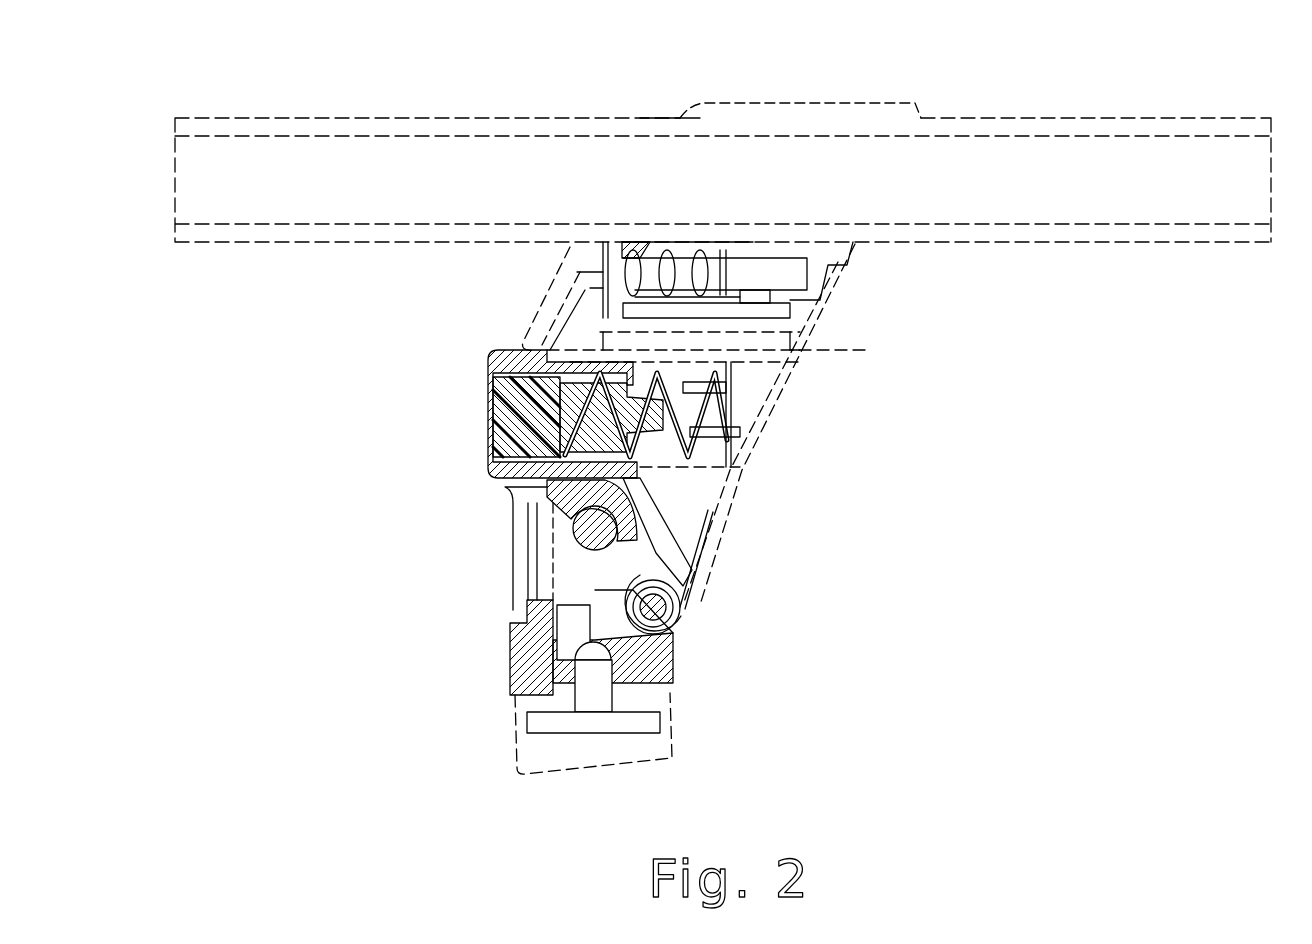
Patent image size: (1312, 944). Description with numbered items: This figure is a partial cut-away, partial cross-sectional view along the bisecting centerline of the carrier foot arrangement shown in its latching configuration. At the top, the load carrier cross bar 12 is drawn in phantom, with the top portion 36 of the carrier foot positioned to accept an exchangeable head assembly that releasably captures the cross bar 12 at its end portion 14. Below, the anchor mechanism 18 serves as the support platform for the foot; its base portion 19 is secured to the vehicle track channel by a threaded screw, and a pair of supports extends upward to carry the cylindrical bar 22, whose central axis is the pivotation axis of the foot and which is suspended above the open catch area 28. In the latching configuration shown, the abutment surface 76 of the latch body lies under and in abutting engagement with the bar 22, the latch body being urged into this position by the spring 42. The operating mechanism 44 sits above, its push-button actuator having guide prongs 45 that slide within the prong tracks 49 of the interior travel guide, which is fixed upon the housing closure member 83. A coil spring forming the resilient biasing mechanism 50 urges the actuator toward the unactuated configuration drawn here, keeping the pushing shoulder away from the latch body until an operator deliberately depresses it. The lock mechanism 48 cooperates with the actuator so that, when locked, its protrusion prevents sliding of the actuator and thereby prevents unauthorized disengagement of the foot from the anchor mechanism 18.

The load carrier cross bar 12 is at (1015, 118).
The end portion 14 is at (678, 116).
The top portion 36 is at (813, 95).
The operating mechanism 44 is at (748, 477).
The prong tracks 49 is at (780, 360).
The lock mechanism 48 is at (478, 415).
The resilient biasing mechanism 50 is at (697, 413).
The guide prongs 45 is at (760, 392).
The abutment surface 76 is at (580, 557).
The cylindrical bar 22 is at (572, 518).
The catch area 28 is at (583, 568).
The spring 42 is at (682, 560).
The housing closure member 83 is at (715, 540).
The anchor mechanism 18 is at (482, 637).
The base portion 19 is at (508, 657).